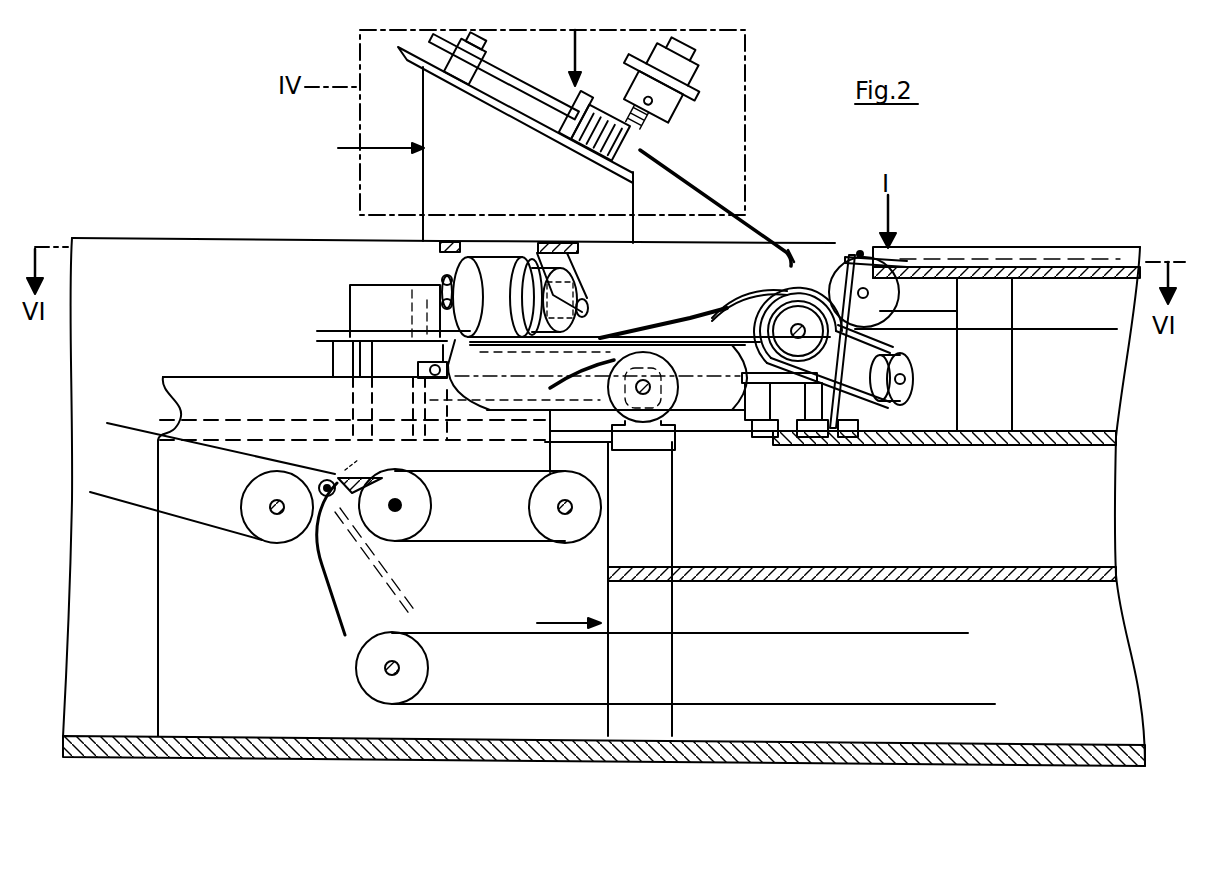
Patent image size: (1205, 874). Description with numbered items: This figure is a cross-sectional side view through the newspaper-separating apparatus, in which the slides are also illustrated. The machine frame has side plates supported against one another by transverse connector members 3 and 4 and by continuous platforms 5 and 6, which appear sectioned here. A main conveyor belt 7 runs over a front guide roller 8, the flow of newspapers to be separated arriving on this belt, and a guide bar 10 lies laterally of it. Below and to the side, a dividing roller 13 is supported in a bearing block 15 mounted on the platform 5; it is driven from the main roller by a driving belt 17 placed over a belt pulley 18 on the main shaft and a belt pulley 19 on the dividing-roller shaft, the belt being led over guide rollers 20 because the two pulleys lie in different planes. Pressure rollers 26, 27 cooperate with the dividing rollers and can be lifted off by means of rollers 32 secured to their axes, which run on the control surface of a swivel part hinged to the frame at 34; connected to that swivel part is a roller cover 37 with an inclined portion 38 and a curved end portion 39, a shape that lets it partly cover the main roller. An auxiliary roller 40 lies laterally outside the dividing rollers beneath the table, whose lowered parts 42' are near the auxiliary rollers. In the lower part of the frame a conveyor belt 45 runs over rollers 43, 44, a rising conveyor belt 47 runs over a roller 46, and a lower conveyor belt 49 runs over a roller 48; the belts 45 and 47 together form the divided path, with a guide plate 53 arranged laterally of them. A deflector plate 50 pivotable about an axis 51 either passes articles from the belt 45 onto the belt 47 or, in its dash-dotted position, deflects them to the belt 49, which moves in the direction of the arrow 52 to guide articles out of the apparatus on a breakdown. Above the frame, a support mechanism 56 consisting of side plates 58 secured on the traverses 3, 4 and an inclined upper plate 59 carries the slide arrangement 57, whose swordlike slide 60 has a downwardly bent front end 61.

The transverse connector member 3 is at (445, 242).
The transverse connector member 4 is at (556, 243).
The platform 5 is at (947, 440).
The platform 6 is at (852, 575).
The main conveyor belt 7 is at (1079, 333).
The front guide roller 8 is at (842, 280).
The guide bar 10 is at (1095, 250).
The dividing roller 13 is at (623, 375).
The bearing block 15 is at (416, 372).
The driving belt 17 is at (880, 352).
The belt pulley 18 is at (800, 320).
The belt pulley 19 is at (901, 393).
The guide roller 20 is at (848, 395).
The pressure roller 26 is at (482, 282).
The pressure roller 27 is at (503, 250).
The roller 32 is at (444, 283).
The hinge connection 34 is at (343, 340).
The roller cover 37 is at (613, 330).
The inclined portion 38 is at (684, 321).
The curved end portion 39 is at (740, 296).
The auxiliary roller 40 is at (668, 383).
The table part 42' is at (582, 386).
The roller 43 is at (405, 527).
The roller 44 is at (575, 530).
The conveyor belt 45 is at (485, 543).
The roller 46 is at (277, 530).
The conveyor belt 47 is at (190, 518).
The roller 48 is at (362, 665).
The conveyor belt 49 is at (802, 632).
The deflector plate 50 is at (332, 611).
The axis 51 is at (318, 483).
The arrow 52 is at (549, 623).
The guide plate 53 is at (316, 415).
The support mechanism 56 is at (363, 149).
The slide arrangement 57 is at (568, 91).
The side plate 58 is at (478, 188).
The upper plate 59 is at (424, 61).
The slide 60 is at (682, 178).
The front end 61 is at (790, 246).